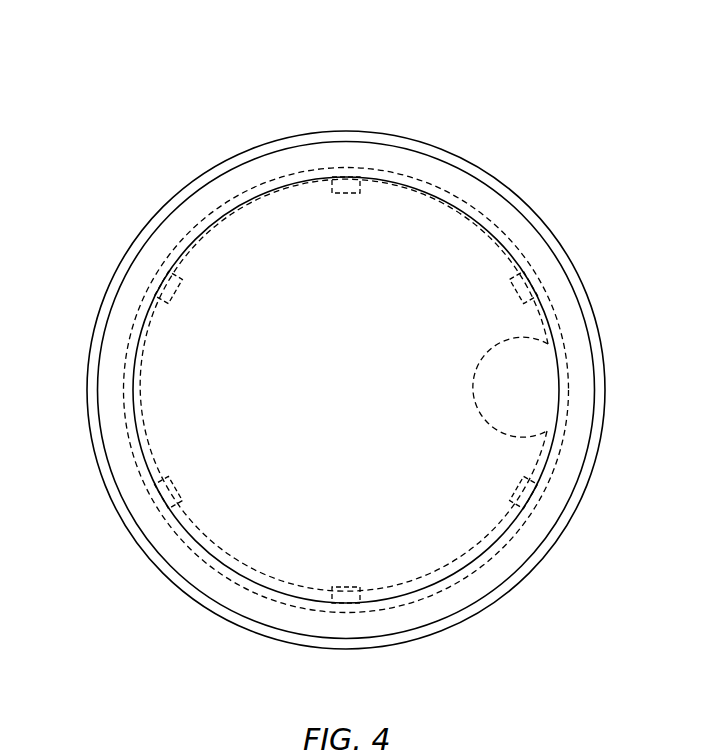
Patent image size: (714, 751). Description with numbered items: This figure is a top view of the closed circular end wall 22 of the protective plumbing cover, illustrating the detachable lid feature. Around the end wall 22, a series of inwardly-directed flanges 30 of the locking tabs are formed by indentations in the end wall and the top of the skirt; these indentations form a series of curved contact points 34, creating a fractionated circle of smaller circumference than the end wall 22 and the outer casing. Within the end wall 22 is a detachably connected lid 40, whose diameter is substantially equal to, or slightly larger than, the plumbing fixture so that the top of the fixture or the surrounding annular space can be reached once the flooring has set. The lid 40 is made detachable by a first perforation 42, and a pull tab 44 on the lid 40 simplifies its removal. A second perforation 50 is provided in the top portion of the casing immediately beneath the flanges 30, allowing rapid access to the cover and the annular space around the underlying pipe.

The closed circular end wall 22 is at (517, 252).
The flange 30 is at (163, 281).
The curved contact points 34 is at (347, 177).
The detachably connected lid 40 is at (362, 393).
The first perforation 42 is at (492, 542).
The pull tab 44 is at (548, 383).
The second perforation 50 is at (123, 437).